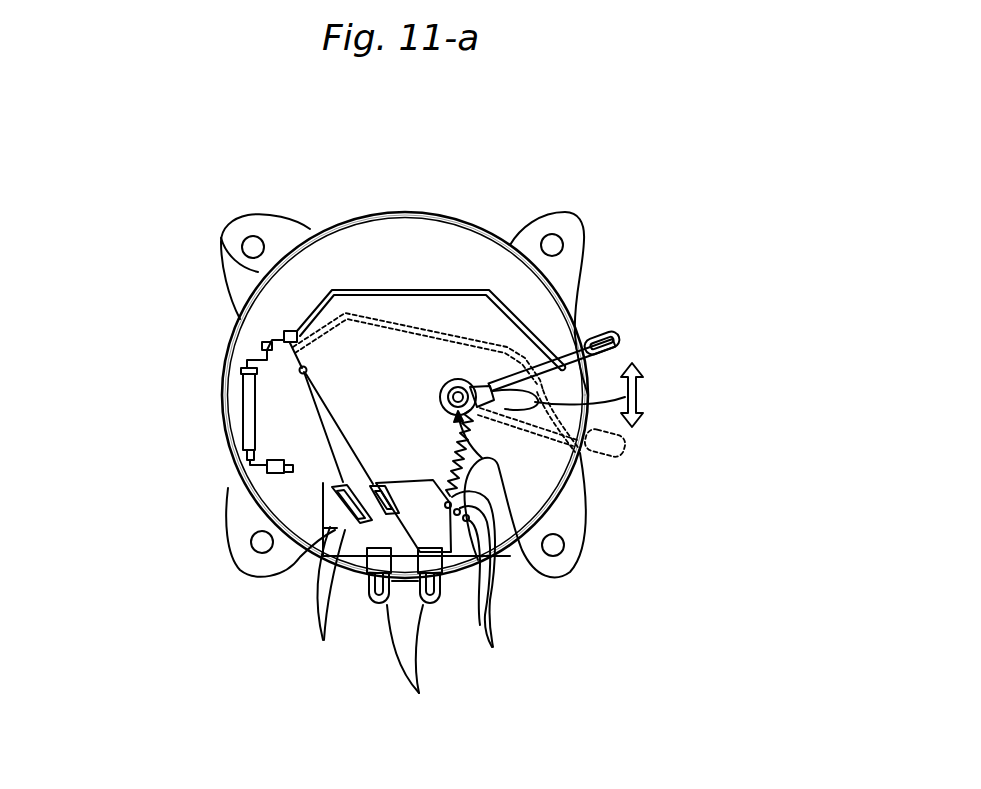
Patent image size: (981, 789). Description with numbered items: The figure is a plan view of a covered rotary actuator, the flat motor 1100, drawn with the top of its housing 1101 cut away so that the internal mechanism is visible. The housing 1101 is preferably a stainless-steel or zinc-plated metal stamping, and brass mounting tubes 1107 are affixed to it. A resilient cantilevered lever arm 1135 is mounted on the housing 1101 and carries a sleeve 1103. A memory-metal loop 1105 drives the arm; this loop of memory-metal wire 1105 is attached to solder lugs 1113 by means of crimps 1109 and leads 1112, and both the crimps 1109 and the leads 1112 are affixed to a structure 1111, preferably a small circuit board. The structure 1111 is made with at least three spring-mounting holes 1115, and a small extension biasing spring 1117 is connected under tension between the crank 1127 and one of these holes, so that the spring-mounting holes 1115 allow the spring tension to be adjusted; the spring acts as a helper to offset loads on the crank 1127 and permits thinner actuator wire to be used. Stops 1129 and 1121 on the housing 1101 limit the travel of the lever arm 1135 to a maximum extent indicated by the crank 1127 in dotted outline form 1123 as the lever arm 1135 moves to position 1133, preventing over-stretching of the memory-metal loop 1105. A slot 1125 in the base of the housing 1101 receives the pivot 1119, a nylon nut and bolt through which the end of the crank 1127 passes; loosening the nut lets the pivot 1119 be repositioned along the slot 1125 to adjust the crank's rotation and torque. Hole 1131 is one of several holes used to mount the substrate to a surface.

The flat motor 1100 is at (303, 199).
The housing 1101 is at (243, 318).
The sleeve 1103 is at (284, 337).
The memory-metal loop 1105 is at (297, 347).
The mounting tubes 1107 is at (249, 405).
The crimps 1109 is at (347, 502).
The structure 1111 is at (323, 556).
The leads 1112 is at (328, 600).
The solder lugs 1113 is at (419, 693).
The spring-mounting holes 1115 is at (493, 650).
The biasing spring 1117 is at (522, 550).
The pivot 1119 is at (475, 445).
The stop 1121 is at (583, 453).
The dotted outline form 1123 is at (620, 453).
The slot 1125 is at (638, 397).
The crank 1127 is at (620, 343).
The stop 1129 is at (582, 340).
The hole 1131 is at (552, 245).
The position 1133 is at (435, 330).
The cantilevered lever arm 1135 is at (373, 291).